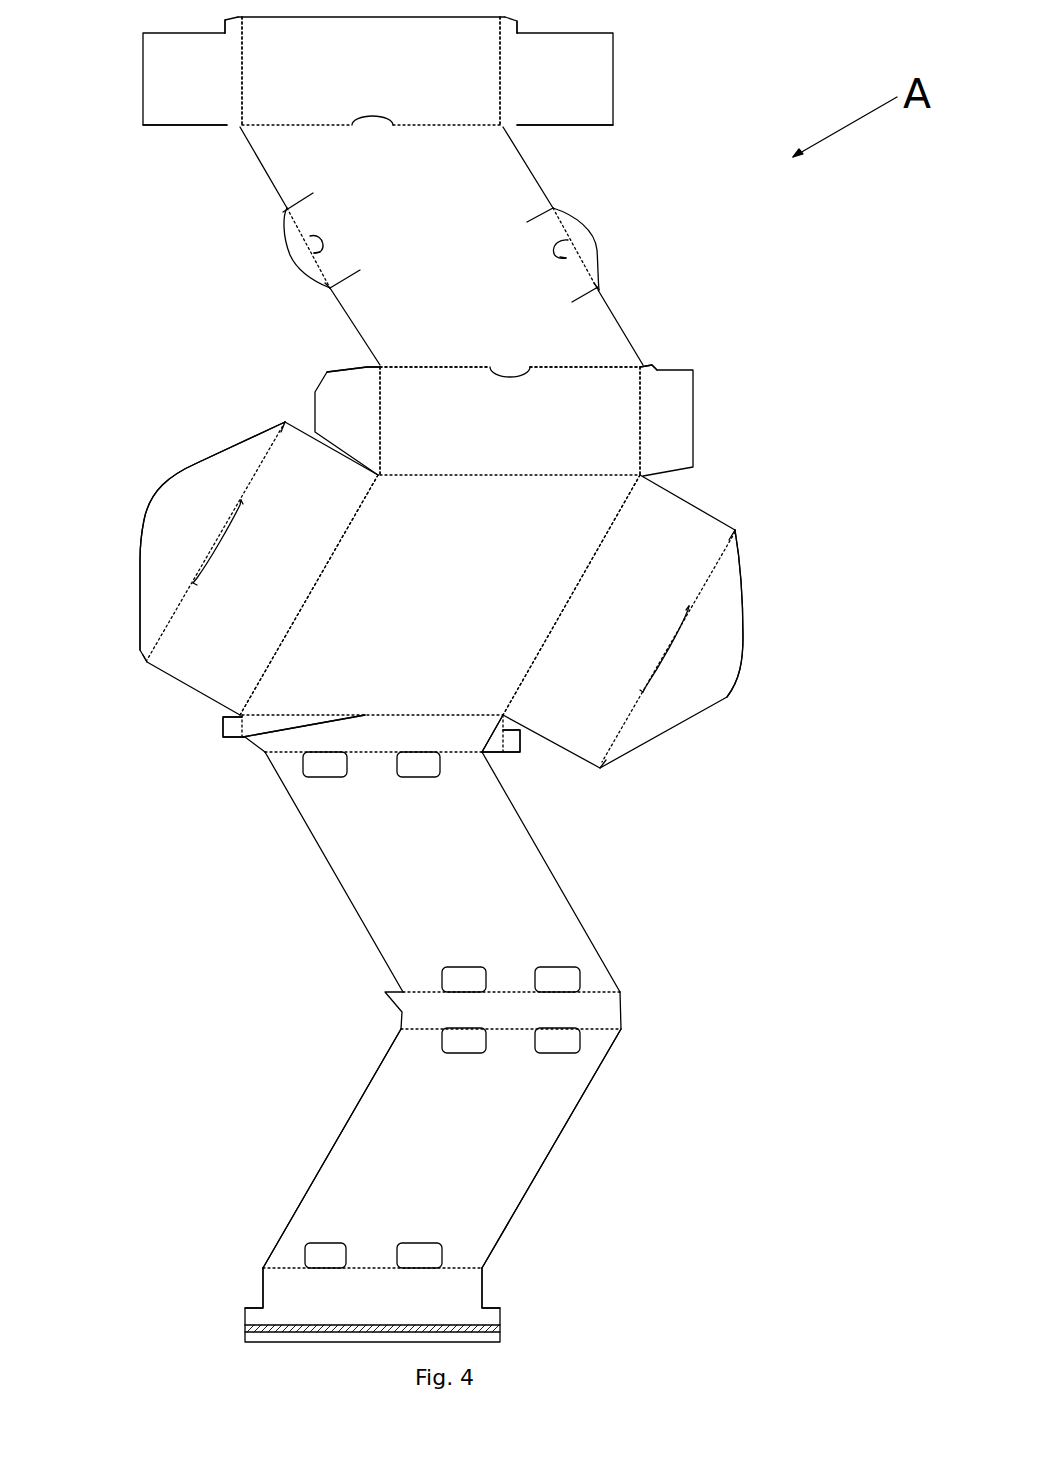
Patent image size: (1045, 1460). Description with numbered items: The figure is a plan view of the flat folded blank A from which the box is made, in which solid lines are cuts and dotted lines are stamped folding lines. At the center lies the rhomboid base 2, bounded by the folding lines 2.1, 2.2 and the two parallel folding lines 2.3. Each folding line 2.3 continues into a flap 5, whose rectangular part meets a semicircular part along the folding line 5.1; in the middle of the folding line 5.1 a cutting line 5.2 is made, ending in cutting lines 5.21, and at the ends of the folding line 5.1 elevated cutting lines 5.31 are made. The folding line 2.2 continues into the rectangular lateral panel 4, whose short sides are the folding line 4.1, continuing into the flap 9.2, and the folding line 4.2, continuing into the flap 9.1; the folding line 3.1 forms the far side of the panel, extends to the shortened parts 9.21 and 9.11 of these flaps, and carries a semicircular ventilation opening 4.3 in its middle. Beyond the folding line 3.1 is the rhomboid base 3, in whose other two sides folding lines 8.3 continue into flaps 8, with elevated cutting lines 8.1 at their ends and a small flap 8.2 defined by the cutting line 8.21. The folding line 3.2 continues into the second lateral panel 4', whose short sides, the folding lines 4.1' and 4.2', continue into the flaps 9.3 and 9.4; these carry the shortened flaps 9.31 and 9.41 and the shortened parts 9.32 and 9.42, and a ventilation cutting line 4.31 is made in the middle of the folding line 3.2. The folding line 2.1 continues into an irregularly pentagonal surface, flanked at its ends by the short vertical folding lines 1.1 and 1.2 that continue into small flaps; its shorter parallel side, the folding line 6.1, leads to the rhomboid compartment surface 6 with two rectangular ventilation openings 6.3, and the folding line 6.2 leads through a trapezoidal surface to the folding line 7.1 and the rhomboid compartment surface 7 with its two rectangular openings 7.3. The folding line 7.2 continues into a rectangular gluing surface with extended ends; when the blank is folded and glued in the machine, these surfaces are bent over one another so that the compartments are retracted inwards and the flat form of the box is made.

The base 3 is at (417, 328).
The lateral panel 4' is at (281, 38).
The flap 9.4 is at (190, 77).
The flap 9.3 is at (565, 60).
The shortened flap 9.41 is at (225, 25).
The shortened flap 9.31 is at (520, 25).
The folding line 4.2' is at (143, 71).
The folding line 4.1' is at (626, 71).
The shortened part 9.42 is at (227, 125).
The shortened part 9.32 is at (513, 125).
The cutting line 4.31 is at (395, 127).
The folding line 3.2 is at (330, 127).
The flap 8 is at (580, 240).
The flap 8.2 is at (315, 240).
The cutting line 8.21 is at (320, 255).
The folding line 8.3 is at (297, 225).
The cutting line 8.1 is at (313, 280).
The lateral panel 4 is at (556, 421).
The folding line 3.1 is at (540, 368).
The semicircular opening 4.3 is at (512, 377).
The folding line 4.2 is at (212, 421).
The folding line 4.1 is at (695, 421).
The flap 9.1 is at (345, 410).
The shortened part 9.11 is at (367, 368).
The flap 9.2 is at (668, 448).
The shortened part 9.21 is at (655, 365).
The base 2 is at (420, 638).
The folding line 2.3 is at (258, 683).
The folding line 2.2 is at (660, 488).
The folding line 2.1 is at (242, 737).
The flap 5 is at (247, 593).
The folding line 5.1 is at (262, 465).
The cutting line 5.2 is at (207, 543).
The cutting line 5.21 is at (240, 507).
The cutting line 5.31 is at (282, 427).
The folding line 1.1 is at (223, 732).
The folding line 1.2 is at (512, 743).
The compartment surface 6 is at (385, 850).
The folding line 6.1 is at (387, 752).
The rectangular openings 6.3 is at (427, 735).
The folding line 6.2 is at (500, 990).
The rectangular openings 7.3 is at (600, 1032).
The folding line 7.1 is at (592, 1012).
The compartment surface 7 is at (470, 1125).
The folding line 7.2 is at (483, 1267).